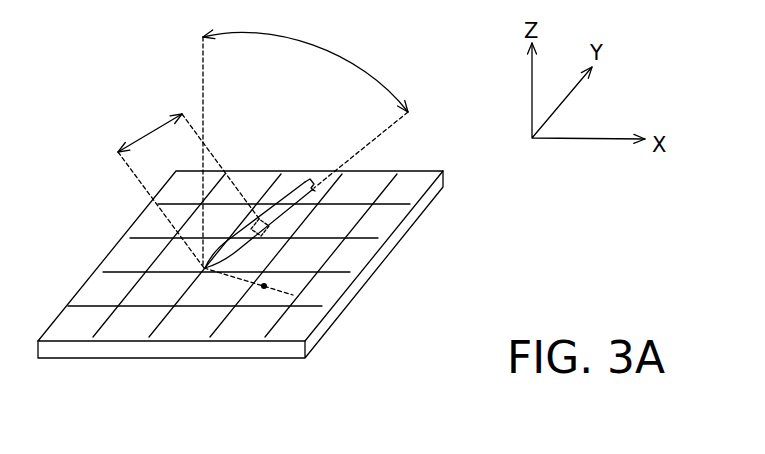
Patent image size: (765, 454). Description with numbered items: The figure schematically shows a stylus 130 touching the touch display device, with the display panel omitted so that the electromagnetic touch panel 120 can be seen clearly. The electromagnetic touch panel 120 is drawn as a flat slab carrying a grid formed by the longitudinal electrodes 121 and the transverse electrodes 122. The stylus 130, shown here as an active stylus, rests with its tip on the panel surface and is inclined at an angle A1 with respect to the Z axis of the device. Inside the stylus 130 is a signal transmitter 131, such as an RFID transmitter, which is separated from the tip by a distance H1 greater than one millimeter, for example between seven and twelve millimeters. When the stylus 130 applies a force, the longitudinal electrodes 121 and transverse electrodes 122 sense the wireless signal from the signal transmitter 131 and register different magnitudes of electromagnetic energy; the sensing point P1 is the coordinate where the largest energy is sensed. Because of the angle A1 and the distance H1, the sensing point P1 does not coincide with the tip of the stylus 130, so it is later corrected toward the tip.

The electromagnetic touch panel 120 is at (407, 170).
The longitudinal electrodes 121 is at (328, 256).
The transverse electrodes 122 is at (373, 230).
The stylus 130 is at (306, 186).
The signal transmitter 131 is at (262, 217).
The sensing point P1 is at (264, 286).
The distance H1 is at (150, 126).
The angle A1 is at (305, 65).